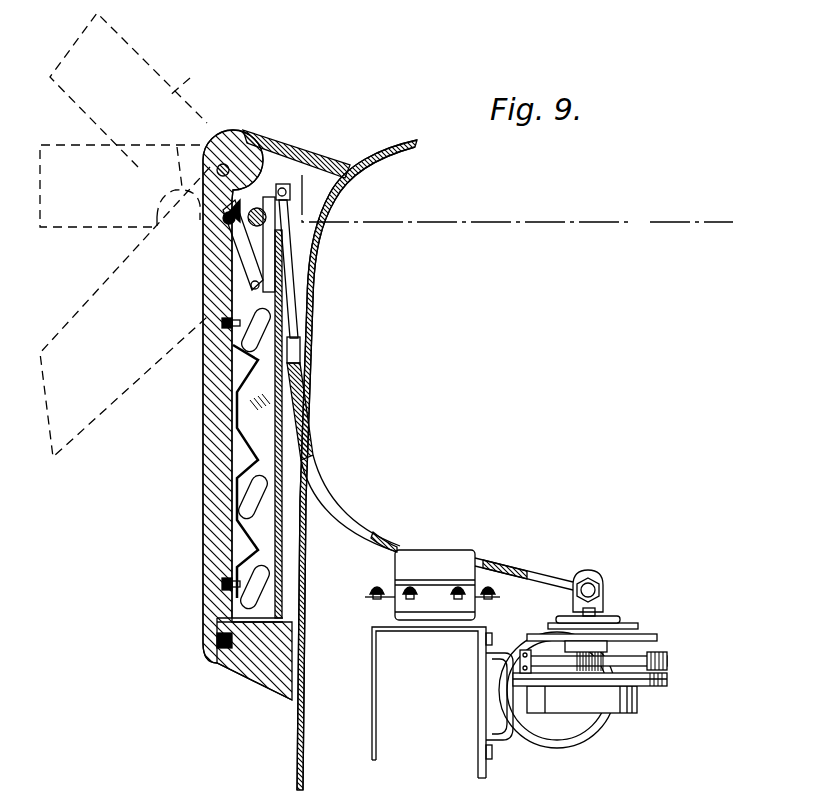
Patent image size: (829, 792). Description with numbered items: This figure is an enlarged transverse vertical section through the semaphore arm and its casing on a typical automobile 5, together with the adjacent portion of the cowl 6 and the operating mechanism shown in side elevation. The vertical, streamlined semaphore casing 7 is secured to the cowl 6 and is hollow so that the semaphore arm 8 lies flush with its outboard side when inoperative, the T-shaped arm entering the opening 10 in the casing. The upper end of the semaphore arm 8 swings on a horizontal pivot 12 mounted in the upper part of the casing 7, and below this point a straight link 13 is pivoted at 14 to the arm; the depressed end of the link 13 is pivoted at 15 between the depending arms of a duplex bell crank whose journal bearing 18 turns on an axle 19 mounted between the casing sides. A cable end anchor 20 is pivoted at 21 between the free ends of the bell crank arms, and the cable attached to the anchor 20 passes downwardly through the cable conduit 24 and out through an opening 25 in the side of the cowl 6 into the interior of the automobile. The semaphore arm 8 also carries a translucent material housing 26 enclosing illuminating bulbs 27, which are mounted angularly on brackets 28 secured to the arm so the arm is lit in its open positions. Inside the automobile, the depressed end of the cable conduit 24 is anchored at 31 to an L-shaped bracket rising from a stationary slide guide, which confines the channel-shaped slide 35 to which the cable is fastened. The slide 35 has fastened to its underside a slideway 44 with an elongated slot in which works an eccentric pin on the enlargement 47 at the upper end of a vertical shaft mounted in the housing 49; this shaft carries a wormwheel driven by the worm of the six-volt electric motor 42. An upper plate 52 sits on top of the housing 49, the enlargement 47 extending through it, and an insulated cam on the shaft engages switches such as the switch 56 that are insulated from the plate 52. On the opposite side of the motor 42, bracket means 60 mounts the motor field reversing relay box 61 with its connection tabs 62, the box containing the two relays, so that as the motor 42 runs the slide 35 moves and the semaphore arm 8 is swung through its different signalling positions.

The automobile 5 is at (117, 242).
The cowl 6 is at (292, 718).
The semaphore casing 7 is at (200, 453).
The semaphore arm 8 is at (183, 488).
The opening 10 is at (187, 318).
The horizontal pivot 12 is at (248, 143).
The straight link 13 is at (233, 253).
The pivot 14 is at (226, 219).
The pivot 15 is at (257, 287).
The journal bearing 18 is at (268, 253).
The axle 19 is at (260, 210).
The cable end anchor 20 is at (325, 182).
The pivot 21 is at (288, 185).
The cable conduit 24 is at (308, 460).
The opening 25 is at (305, 408).
The translucent material housing 26 is at (282, 550).
The illuminating bulbs 27 is at (263, 597).
The brackets 28 is at (300, 333).
The anchor point 31 is at (604, 600).
The channel-shaped slide 35 is at (610, 617).
The six-volt electric motor 42 is at (596, 733).
The slideway 44 is at (637, 625).
The enlargement 47 is at (610, 640).
The housing 49 is at (637, 702).
The upper plate 52 is at (667, 680).
The switch 56 is at (667, 660).
The bracket means 60 is at (474, 700).
The motor field reversing relay box 61 is at (455, 551).
The connection tabs 62 is at (407, 600).